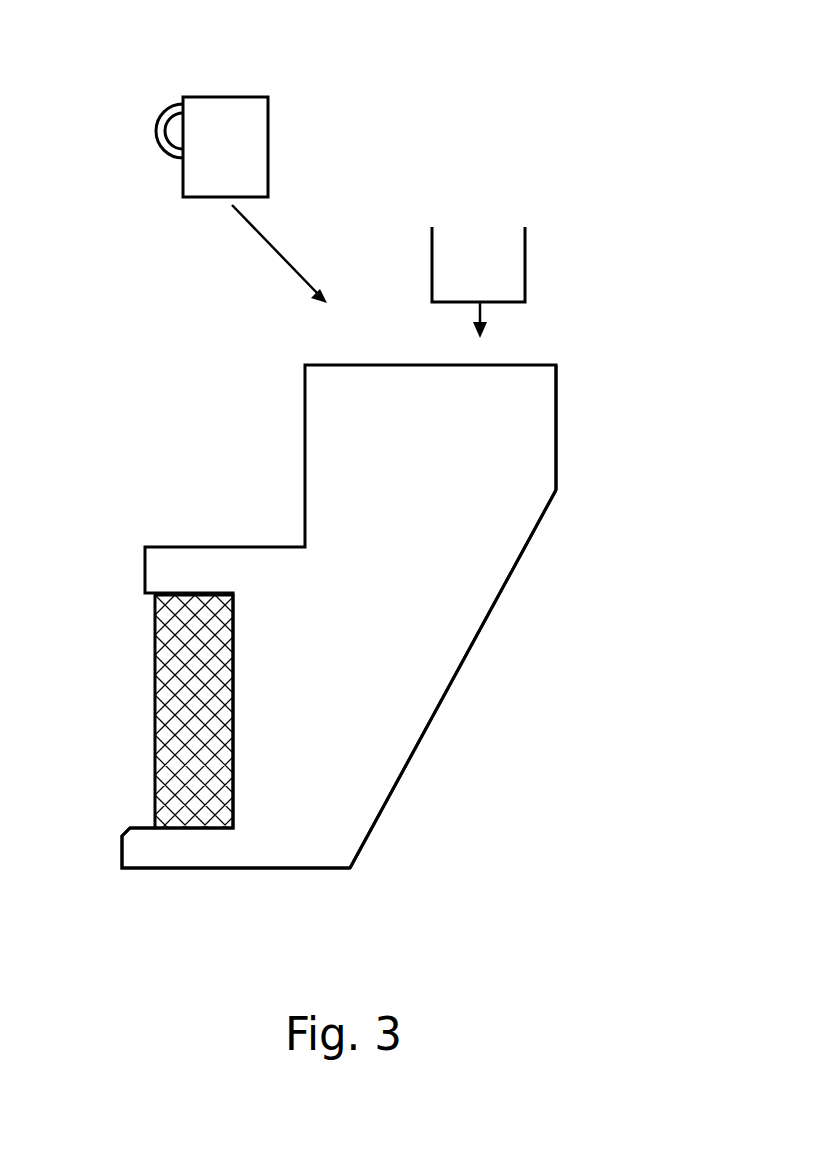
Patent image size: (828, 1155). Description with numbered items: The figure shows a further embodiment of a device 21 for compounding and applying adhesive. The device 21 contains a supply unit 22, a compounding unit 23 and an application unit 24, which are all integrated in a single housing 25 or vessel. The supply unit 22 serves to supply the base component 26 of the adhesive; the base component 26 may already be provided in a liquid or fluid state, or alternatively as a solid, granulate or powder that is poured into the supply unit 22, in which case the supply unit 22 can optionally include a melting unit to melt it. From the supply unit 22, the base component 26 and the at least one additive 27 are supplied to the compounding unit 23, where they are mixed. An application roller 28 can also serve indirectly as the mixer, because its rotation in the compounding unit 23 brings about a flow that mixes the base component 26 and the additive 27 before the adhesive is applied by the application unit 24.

The device 21 is at (103, 408).
The supply unit 22 is at (548, 448).
The compounding unit 23 is at (430, 644).
The application unit 24 is at (292, 815).
The housing 25 is at (617, 583).
The base component 26 is at (487, 309).
The additive 27 is at (220, 110).
The application roller 28 is at (188, 715).